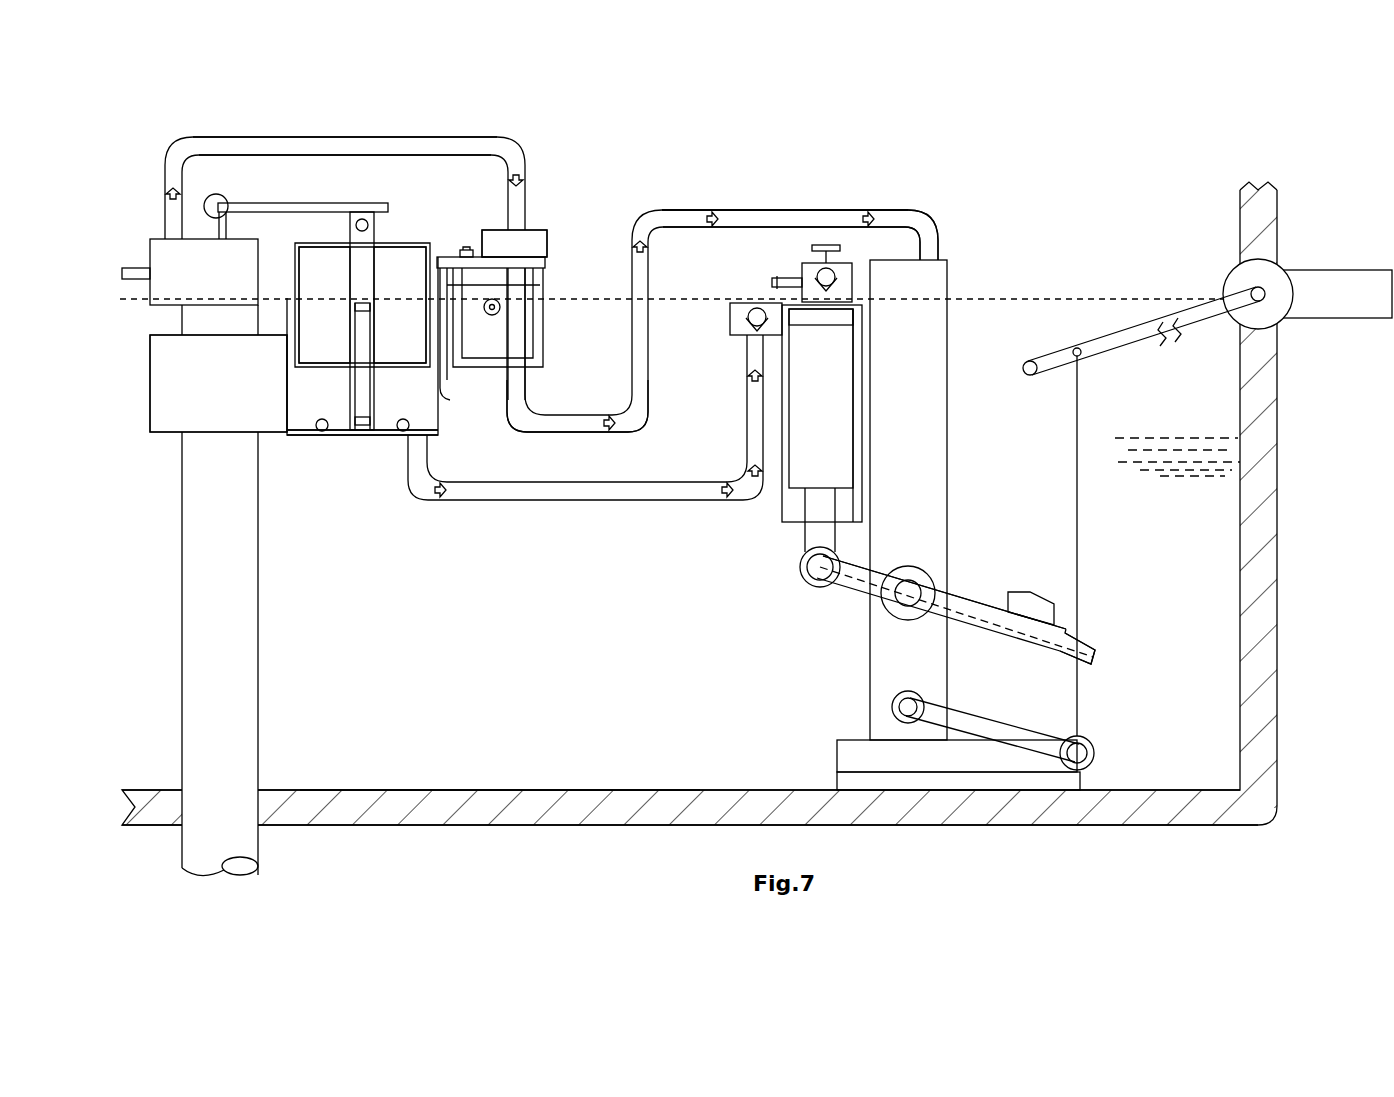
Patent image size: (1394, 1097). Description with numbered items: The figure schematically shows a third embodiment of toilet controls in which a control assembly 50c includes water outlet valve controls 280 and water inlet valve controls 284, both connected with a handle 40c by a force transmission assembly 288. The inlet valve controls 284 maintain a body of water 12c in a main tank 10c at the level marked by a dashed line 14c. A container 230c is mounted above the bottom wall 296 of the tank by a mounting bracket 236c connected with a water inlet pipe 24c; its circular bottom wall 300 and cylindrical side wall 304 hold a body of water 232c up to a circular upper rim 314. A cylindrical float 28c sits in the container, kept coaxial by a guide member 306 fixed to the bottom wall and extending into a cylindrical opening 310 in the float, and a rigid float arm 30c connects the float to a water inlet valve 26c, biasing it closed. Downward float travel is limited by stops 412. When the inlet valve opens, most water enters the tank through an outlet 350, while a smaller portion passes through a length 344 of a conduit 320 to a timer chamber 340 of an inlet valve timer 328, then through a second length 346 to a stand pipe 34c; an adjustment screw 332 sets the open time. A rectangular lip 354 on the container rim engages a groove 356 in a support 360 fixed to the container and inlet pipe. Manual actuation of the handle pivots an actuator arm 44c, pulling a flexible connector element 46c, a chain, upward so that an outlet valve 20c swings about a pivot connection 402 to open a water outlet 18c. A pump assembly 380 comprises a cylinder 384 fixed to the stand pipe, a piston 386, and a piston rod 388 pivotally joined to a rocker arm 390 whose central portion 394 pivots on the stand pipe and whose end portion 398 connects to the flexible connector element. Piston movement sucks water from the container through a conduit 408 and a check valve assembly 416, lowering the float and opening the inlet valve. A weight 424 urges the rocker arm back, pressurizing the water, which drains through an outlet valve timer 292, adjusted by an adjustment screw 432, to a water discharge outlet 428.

The main tank 10c is at (1285, 600).
The body of water 12c is at (1250, 460).
The dashed line 14c is at (1020, 298).
The water outlet 18c is at (1090, 780).
The outlet valve 20c is at (985, 736).
The water inlet pipe 24c is at (232, 706).
The water inlet valve 26c is at (160, 258).
The float 28c is at (396, 268).
The float arm 30c is at (308, 203).
The stand pipe 34c is at (922, 405).
The handle 40c is at (1310, 283).
The actuator arm 44c is at (1110, 345).
The flexible connector element 46c is at (1080, 490).
The control assembly 50c is at (830, 158).
The container 230c is at (458, 420).
The body of water 232c is at (385, 405).
The mounting bracket 236c is at (165, 412).
The water outlet valve controls 280 is at (948, 240).
The water inlet valve controls 284 is at (293, 130).
The force transmission assembly 288 is at (552, 608).
The outlet valve timer 292 is at (800, 262).
The bottom wall 296 is at (585, 790).
The bottom wall 300 is at (340, 435).
The side wall 304 is at (290, 375).
The guide member 306 is at (356, 394).
The cylindrical opening 310 is at (358, 282).
The upper rim 314 is at (292, 305).
The conduit 320 is at (688, 210).
The inlet valve timer 328 is at (552, 224).
The adjustment screw 332 is at (467, 249).
The timer chamber 340 is at (532, 246).
The length of conduit 344 is at (412, 146).
The second length of conduit 346 is at (757, 222).
The outlet 350 is at (132, 280).
The rectangular lip 354 is at (450, 372).
The groove 356 is at (540, 286).
The support 360 is at (542, 330).
The pump assembly 380 is at (776, 518).
The cylinder 384 is at (790, 406).
The piston 386 is at (822, 360).
The piston rod 388 is at (828, 530).
The rocker arm 390 is at (972, 585).
The central portion 394 is at (908, 562).
The end portion 398 is at (1092, 648).
The pivot connection 402 is at (892, 712).
The conduit 408 is at (582, 500).
The stops 412 is at (318, 432).
The check valve assembly 416 is at (730, 324).
The weight 424 is at (1030, 592).
The water discharge outlet 428 is at (772, 283).
The adjustment screw 432 is at (826, 245).